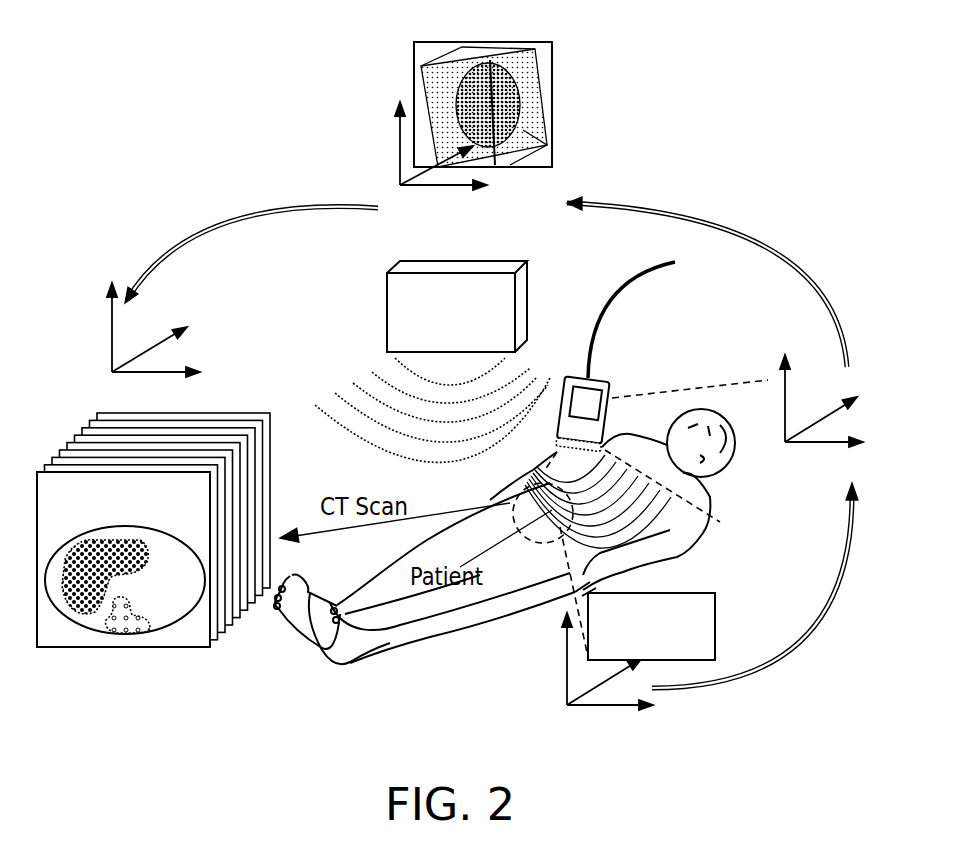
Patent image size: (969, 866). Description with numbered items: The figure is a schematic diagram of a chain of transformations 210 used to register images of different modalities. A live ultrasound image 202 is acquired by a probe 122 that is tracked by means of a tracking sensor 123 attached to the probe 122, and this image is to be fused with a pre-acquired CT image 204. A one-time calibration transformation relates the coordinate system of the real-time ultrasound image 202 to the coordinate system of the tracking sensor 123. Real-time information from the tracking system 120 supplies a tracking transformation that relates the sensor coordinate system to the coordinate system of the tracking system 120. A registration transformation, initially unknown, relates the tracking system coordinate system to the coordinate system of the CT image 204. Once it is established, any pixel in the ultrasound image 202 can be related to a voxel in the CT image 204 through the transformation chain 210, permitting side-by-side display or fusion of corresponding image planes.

The chain of transformations 210 is at (155, 157).
The tracking system 120 is at (387, 300).
The probe 122 is at (580, 377).
The tracking sensor 123 is at (597, 378).
The ultrasound image 202 is at (715, 628).
The CT image 204 is at (183, 648).